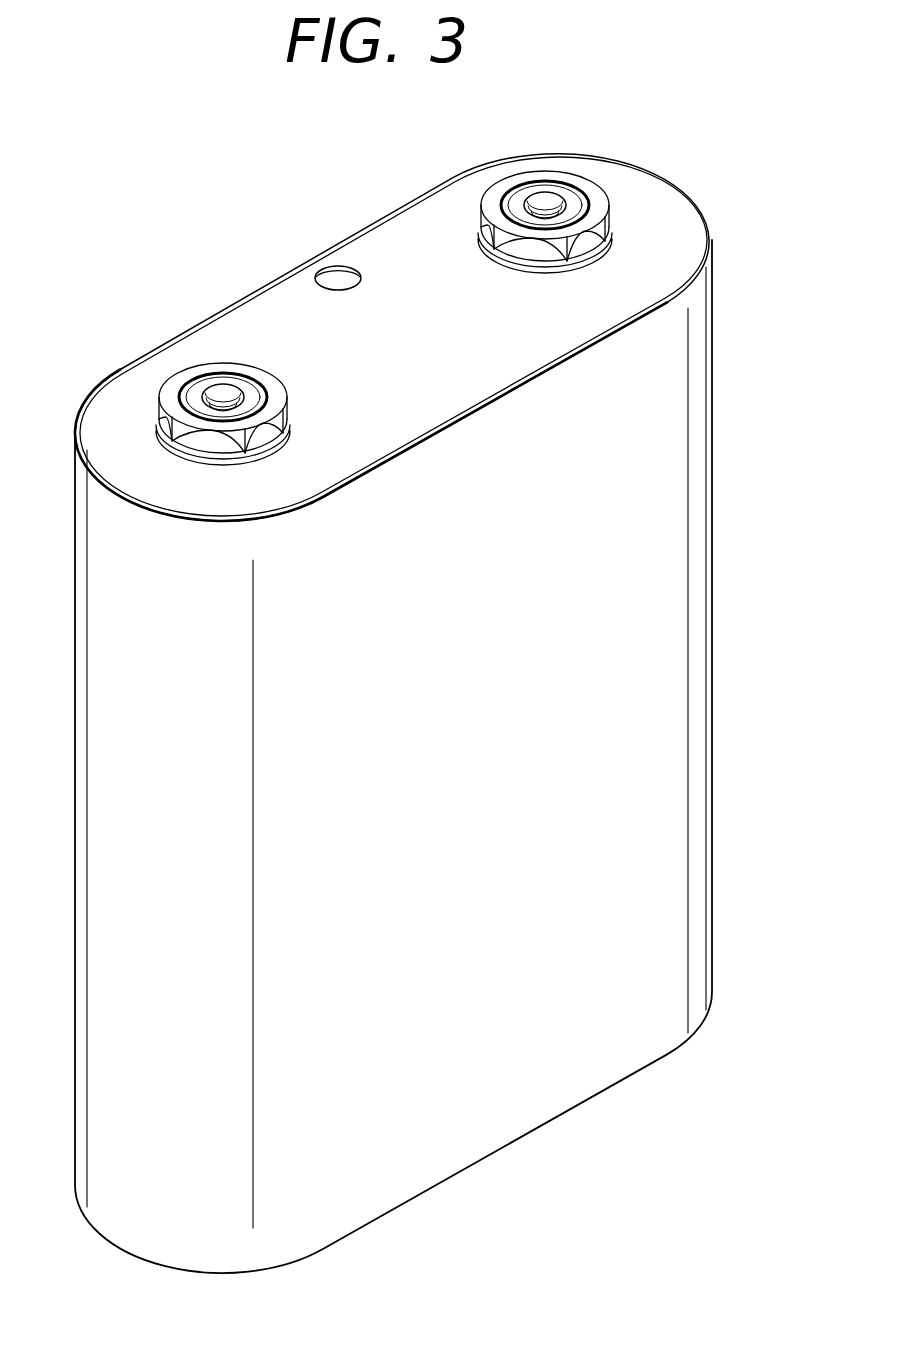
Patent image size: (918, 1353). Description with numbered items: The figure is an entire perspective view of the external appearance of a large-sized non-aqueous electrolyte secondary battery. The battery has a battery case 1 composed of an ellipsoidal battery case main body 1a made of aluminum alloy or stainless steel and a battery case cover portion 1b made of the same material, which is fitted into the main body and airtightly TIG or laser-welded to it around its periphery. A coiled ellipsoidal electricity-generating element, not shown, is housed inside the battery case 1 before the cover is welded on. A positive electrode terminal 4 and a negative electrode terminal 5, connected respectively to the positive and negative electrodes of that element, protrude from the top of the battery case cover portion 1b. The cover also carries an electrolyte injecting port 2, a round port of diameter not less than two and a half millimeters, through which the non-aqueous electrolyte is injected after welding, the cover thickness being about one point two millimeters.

The battery case 1 is at (699, 175).
The battery case main body 1a is at (697, 470).
The battery case cover portion 1b is at (268, 312).
The electrolyte injecting port 2 is at (342, 278).
The positive electrode terminal 4 is at (565, 181).
The negative electrode terminal 5 is at (190, 375).